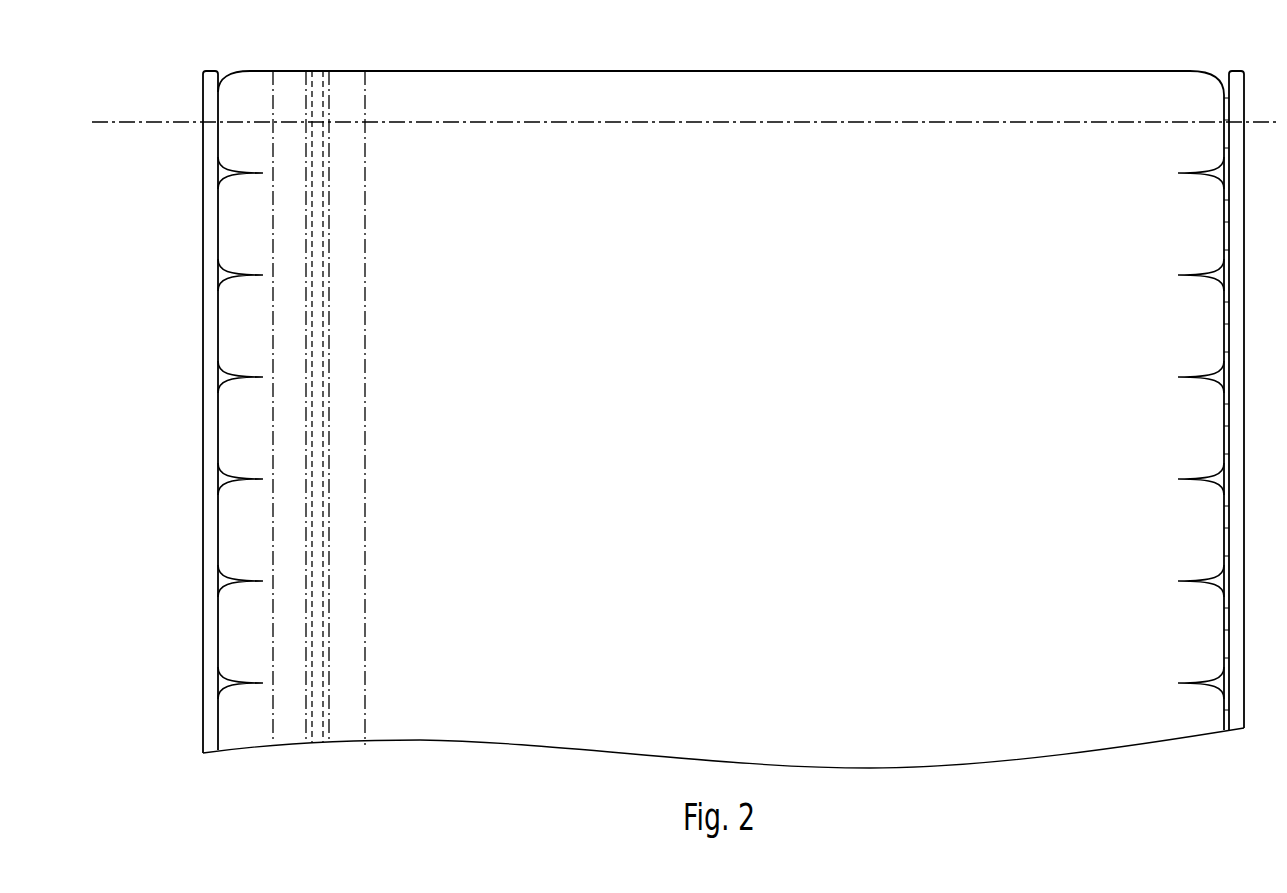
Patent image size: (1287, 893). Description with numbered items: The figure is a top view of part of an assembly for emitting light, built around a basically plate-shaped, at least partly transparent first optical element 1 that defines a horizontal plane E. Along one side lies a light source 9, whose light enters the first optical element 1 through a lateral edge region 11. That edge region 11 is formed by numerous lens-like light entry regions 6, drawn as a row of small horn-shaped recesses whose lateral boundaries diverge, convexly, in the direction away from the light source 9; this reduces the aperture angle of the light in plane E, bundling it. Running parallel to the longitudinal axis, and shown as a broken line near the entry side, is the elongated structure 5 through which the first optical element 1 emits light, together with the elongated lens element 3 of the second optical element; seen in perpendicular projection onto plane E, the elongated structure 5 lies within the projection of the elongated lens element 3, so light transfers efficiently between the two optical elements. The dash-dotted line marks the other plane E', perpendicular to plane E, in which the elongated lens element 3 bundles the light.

The first optical element 1 is at (762, 77).
The elongated lens element 3 is at (347, 78).
The elongated structure 5 is at (317, 78).
The light entry regions 6 is at (228, 332).
The light source 9 is at (203, 232).
The lateral edge region 11 is at (243, 82).
The plane E' is at (684, 96).